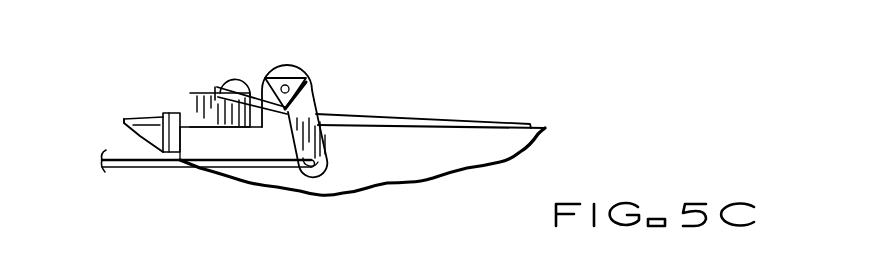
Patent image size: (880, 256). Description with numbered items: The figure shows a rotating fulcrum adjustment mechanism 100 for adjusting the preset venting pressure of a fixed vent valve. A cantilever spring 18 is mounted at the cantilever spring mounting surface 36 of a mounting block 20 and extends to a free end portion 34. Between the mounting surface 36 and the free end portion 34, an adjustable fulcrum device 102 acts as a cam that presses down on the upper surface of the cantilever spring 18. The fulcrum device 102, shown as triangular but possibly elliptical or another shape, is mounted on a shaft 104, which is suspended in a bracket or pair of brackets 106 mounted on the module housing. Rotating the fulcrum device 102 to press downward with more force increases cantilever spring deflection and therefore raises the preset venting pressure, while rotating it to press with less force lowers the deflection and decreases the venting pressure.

The adjustment mechanism 100 is at (480, 83).
The mounting block 20 is at (190, 100).
The cantilever spring mounting surface 36 is at (226, 84).
The bracket 106 is at (268, 66).
The shaft 104 is at (284, 85).
The adjustable fulcrum device 102 is at (312, 75).
The cantilever spring 18 is at (364, 117).
The free end portion 34 is at (482, 123).